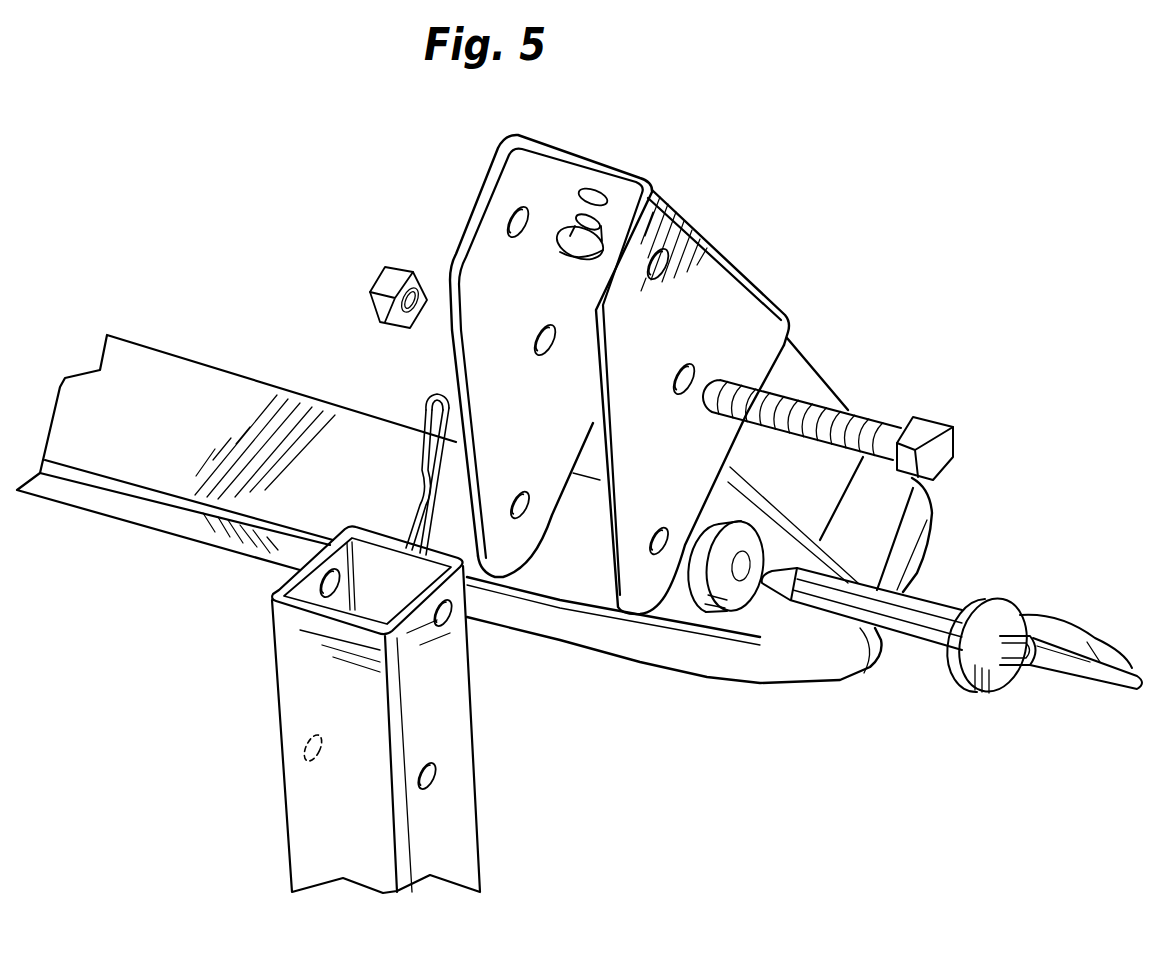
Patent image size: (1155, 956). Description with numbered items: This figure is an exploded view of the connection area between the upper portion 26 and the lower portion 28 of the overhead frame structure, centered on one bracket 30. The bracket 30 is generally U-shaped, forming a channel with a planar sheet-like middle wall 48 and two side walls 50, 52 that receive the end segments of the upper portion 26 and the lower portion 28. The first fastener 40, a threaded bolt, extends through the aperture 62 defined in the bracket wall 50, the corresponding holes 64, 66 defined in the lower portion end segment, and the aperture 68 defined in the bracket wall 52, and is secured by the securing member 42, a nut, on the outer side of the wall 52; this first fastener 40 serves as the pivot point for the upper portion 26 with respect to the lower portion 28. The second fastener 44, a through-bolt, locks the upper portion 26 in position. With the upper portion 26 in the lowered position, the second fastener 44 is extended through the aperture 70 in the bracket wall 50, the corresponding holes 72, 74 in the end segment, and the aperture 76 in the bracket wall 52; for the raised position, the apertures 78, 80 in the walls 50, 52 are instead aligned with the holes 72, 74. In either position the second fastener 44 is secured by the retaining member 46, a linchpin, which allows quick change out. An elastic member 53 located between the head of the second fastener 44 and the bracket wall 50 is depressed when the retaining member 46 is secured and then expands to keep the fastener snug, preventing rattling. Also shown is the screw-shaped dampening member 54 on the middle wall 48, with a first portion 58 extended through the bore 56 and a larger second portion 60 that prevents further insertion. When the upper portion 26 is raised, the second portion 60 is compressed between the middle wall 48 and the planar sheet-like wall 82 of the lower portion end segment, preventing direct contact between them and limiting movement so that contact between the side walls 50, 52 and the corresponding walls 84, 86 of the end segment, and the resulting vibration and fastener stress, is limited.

The upper portion 26 is at (203, 352).
The lower portion 28 is at (375, 710).
The bracket 30 is at (604, 421).
The first fastener 40 is at (917, 433).
The securing member 42 is at (380, 285).
The second fastener 44 is at (937, 637).
The retaining member 46 is at (414, 440).
The middle wall 48 is at (570, 212).
The side wall 50 is at (717, 289).
The side wall 52 is at (447, 363).
The elastic member 53 is at (733, 606).
The dampening member 54 is at (609, 226).
The bore 56 is at (599, 188).
The first portion 58 is at (500, 183).
The second portion 60 is at (573, 251).
The aperture 62 is at (692, 370).
The hole 64 is at (448, 620).
The hole 66 is at (322, 580).
The aperture 68 is at (540, 330).
The aperture 70 is at (660, 556).
The hole 72 is at (435, 772).
The hole 74 is at (300, 748).
The aperture 76 is at (519, 517).
The aperture 78 is at (668, 258).
The aperture 80 is at (508, 220).
The wall 82 is at (300, 688).
The wall 84 is at (453, 723).
The wall 86 is at (273, 623).